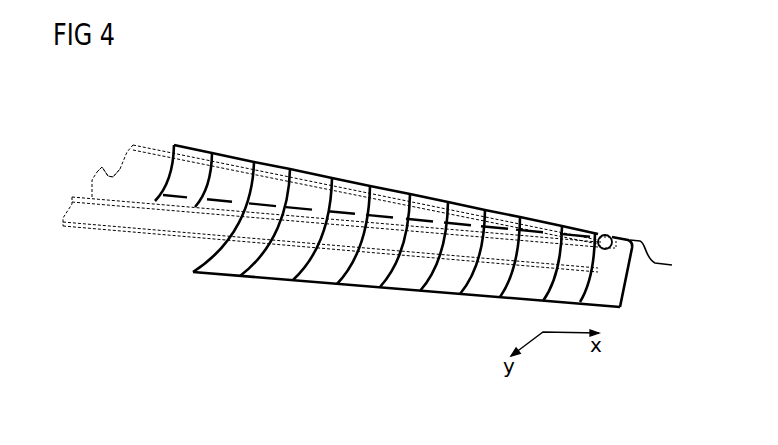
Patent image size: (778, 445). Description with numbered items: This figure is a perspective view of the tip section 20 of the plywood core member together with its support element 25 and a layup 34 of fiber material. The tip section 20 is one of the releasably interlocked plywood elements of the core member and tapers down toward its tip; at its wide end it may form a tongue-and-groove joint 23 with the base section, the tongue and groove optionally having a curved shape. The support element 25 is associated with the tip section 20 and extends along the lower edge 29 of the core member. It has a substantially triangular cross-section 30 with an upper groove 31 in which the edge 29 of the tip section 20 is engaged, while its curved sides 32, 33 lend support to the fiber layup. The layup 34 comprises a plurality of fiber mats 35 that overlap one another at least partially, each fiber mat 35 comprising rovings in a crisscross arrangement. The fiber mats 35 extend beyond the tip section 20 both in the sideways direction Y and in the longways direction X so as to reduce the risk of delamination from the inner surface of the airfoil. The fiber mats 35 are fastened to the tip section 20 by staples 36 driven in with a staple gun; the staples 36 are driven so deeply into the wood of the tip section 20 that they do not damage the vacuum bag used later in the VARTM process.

The tip section 20 is at (144, 147).
The tongue-and-groove joint 23 is at (116, 157).
The support element 25 is at (153, 218).
The lower edge 29 is at (603, 253).
The triangular cross-section 30 is at (600, 250).
The upper groove 31 is at (604, 247).
The curved side 32 is at (72, 216).
The curved side 33 is at (612, 238).
The layup 34 is at (500, 208).
The fiber mat 35 is at (188, 152).
The staple 36 is at (308, 208).